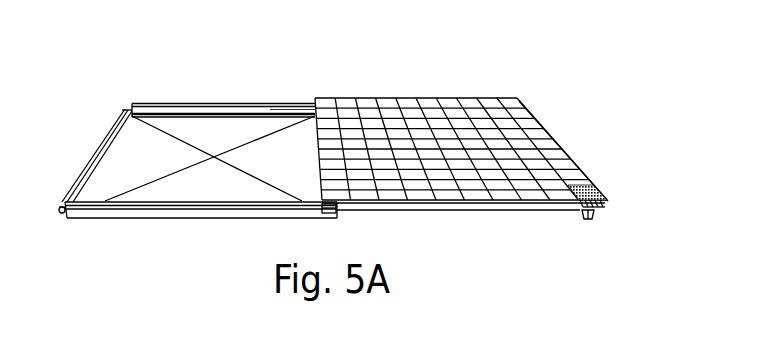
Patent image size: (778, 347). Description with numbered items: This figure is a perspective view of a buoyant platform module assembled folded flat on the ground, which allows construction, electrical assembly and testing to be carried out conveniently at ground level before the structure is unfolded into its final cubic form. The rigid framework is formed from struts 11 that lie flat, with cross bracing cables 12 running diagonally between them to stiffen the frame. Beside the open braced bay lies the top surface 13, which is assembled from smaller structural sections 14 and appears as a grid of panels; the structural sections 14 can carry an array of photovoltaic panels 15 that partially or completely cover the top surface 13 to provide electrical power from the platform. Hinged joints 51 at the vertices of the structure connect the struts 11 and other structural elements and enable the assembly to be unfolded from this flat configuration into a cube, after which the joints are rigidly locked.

The struts 11 is at (155, 103).
The cross bracing cables 12 is at (168, 137).
The top surface 13 is at (435, 140).
The structural sections 14 is at (562, 155).
The photovoltaic panels 15 is at (585, 188).
The hinged joints 51 is at (60, 212).